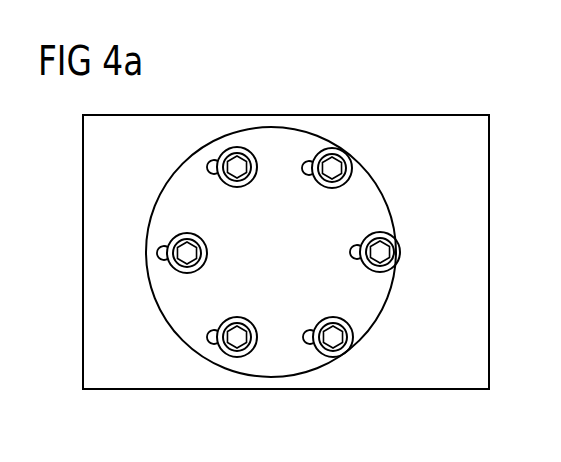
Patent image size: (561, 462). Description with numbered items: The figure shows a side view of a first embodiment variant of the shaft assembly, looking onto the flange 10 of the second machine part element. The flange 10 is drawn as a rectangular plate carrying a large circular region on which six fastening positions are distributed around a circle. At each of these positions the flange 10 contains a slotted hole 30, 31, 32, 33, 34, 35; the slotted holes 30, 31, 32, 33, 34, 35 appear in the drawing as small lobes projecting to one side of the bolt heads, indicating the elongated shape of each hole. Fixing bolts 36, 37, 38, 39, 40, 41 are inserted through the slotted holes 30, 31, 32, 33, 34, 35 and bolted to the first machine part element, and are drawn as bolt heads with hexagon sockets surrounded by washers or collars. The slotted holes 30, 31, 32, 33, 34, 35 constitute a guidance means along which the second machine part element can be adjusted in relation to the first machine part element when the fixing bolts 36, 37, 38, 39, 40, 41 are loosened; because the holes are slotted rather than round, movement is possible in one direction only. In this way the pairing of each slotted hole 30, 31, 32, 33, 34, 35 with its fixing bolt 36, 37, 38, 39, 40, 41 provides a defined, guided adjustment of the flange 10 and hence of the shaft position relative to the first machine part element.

The flange 10 is at (150, 296).
The slotted hole 30 is at (209, 160).
The slotted hole 31 is at (306, 162).
The slotted hole 32 is at (353, 252).
The slotted hole 33 is at (307, 343).
The slotted hole 34 is at (210, 343).
The slotted hole 35 is at (160, 252).
The fixing bolt 36 is at (237, 167).
The fixing bolt 37 is at (332, 168).
The fixing bolt 38 is at (380, 252).
The fixing bolt 39 is at (333, 337).
The fixing bolt 40 is at (237, 337).
The fixing bolt 41 is at (187, 253).